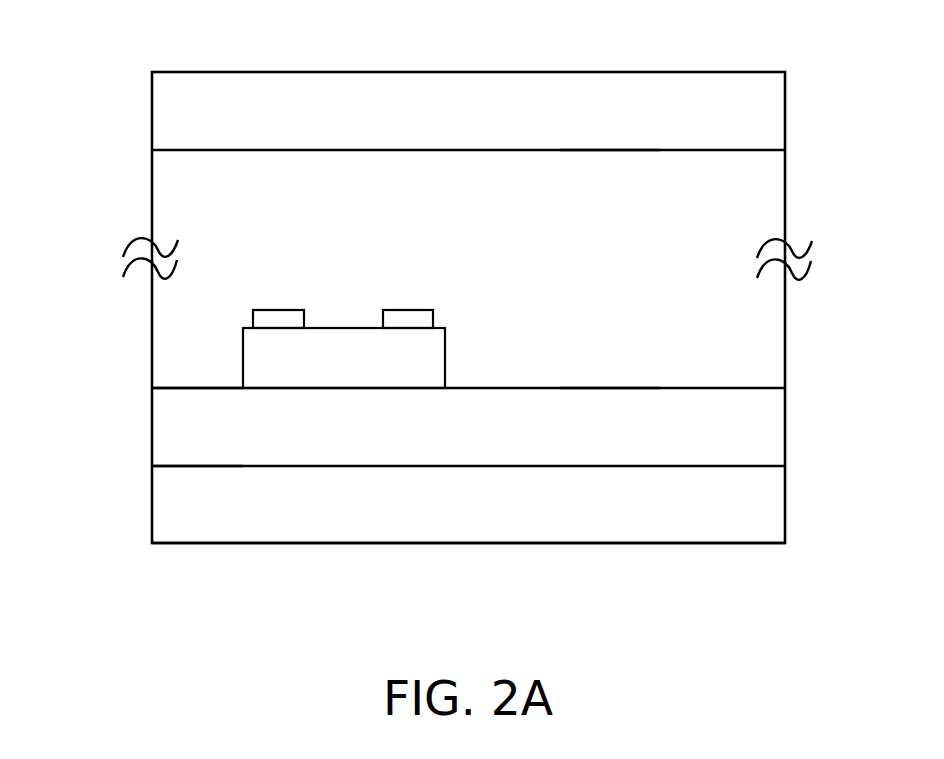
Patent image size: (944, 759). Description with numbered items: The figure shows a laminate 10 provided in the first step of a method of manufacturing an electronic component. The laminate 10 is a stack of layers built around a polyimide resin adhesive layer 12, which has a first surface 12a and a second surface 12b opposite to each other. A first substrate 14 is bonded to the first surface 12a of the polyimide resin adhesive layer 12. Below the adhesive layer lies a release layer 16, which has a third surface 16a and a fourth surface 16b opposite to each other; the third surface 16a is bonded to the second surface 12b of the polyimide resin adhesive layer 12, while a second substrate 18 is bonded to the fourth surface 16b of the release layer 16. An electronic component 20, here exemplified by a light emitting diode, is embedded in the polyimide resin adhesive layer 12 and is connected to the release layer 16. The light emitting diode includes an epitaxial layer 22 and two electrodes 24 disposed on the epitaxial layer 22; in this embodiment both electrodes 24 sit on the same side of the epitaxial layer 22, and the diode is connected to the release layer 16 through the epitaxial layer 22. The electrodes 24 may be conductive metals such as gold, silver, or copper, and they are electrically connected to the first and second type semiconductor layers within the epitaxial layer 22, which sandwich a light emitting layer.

The laminate 10 is at (853, 618).
The polyimide resin adhesive layer 12 is at (767, 330).
The first surface 12a is at (607, 150).
The second surface 12b is at (609, 388).
The first substrate 14 is at (768, 110).
The release layer 16 is at (767, 433).
The third surface 16a is at (205, 387).
The fourth surface 16b is at (205, 467).
The second substrate 18 is at (767, 507).
The electronic component 20 is at (308, 281).
The epitaxial layer 22 is at (257, 354).
The electrodes 24 is at (277, 320).